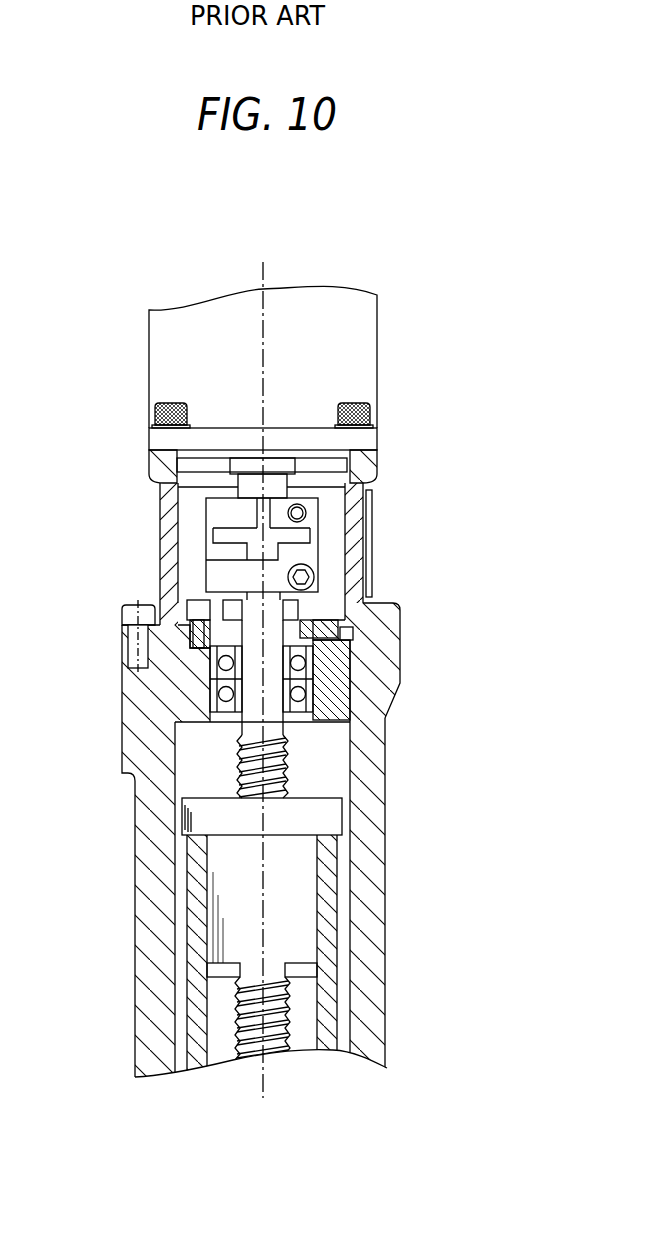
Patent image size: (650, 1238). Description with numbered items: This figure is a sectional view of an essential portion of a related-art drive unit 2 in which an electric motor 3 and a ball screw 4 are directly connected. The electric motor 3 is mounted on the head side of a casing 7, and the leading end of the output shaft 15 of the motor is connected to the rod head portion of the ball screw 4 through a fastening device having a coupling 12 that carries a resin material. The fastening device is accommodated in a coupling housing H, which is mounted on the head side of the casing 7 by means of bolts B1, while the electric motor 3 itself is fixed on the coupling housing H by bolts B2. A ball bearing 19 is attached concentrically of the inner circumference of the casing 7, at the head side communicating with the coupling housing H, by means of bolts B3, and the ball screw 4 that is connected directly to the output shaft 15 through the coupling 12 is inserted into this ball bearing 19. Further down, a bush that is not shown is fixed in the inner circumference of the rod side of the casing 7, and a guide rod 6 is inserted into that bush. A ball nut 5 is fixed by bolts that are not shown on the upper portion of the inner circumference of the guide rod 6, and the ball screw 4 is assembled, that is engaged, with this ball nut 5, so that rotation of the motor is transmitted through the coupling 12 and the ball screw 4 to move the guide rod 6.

The drive unit 2 is at (272, 680).
The electric motor 3 is at (158, 358).
The bolts B2 is at (166, 406).
The output shaft 15 is at (276, 487).
The coupling housing H is at (172, 496).
The coupling 12 is at (207, 540).
The bolts B3 is at (196, 602).
The bolts B1 is at (122, 617).
The ball bearing 19 is at (320, 658).
The ball screw 4 is at (282, 746).
The ball nut 5 is at (333, 815).
The casing 7 is at (372, 905).
The guide rod 6 is at (323, 1007).